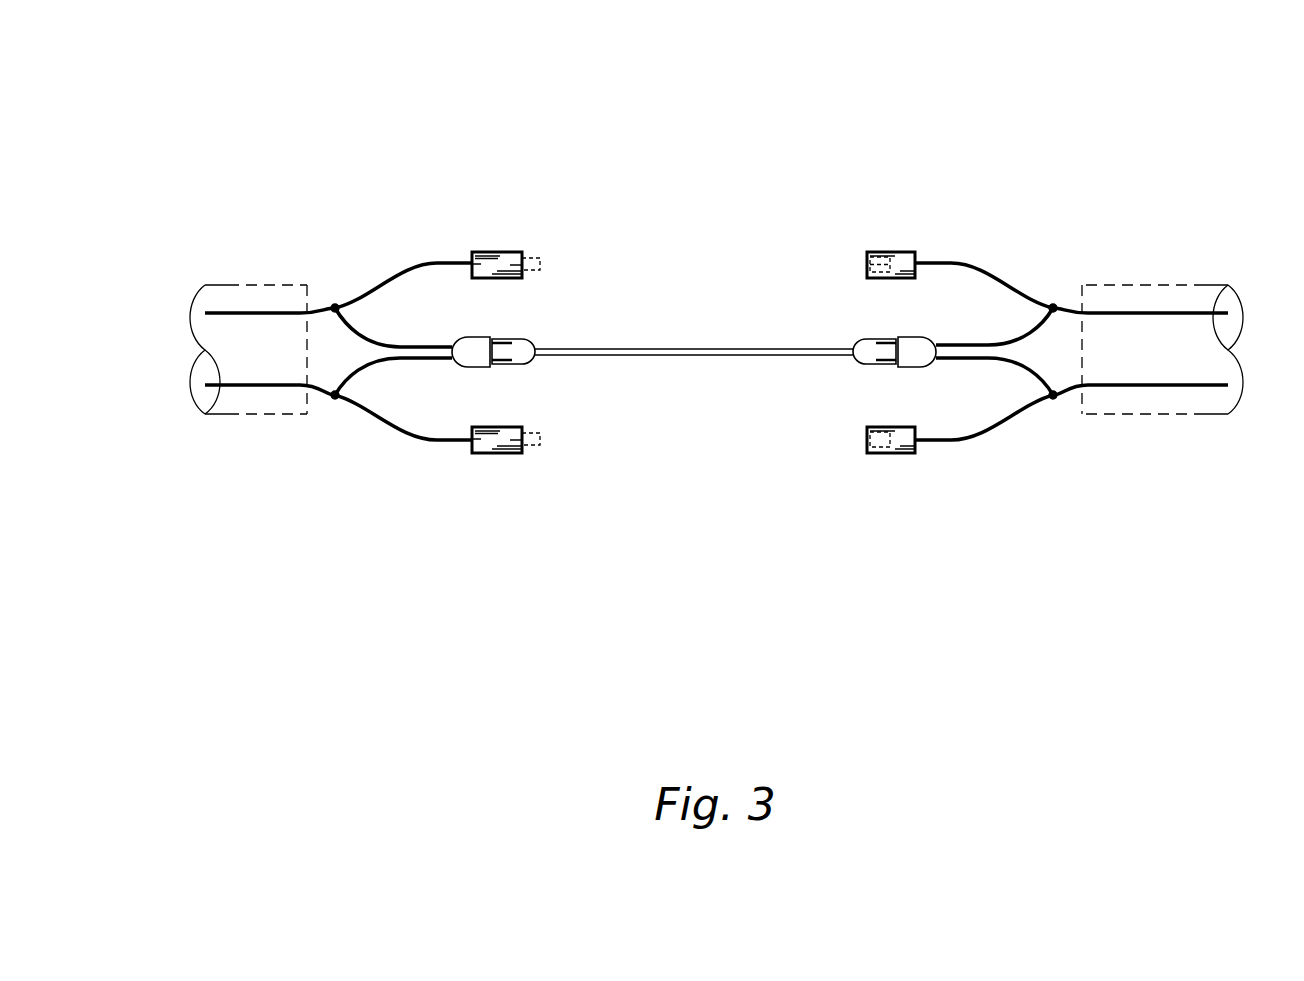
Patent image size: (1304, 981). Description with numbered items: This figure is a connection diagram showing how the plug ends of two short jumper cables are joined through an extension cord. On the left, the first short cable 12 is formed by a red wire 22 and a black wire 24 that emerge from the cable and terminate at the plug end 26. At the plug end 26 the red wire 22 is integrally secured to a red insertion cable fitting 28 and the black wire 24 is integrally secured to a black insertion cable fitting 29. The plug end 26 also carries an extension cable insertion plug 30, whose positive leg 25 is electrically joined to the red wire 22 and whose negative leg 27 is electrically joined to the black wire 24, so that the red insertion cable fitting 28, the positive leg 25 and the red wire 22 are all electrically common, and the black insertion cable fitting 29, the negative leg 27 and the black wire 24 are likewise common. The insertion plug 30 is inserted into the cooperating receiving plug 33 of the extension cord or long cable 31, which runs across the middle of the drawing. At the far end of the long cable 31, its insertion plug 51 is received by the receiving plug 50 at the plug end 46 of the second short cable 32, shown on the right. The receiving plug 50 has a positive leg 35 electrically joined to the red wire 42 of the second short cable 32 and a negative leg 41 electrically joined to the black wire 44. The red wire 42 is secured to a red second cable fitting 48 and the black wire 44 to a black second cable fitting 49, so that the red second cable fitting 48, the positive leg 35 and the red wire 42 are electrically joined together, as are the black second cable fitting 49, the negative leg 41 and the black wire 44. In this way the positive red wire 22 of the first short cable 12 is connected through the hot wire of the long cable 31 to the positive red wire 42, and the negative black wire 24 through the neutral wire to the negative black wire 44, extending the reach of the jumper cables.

The first short cable 12 is at (230, 285).
The red wire 22 is at (290, 312).
The black wire 24 is at (282, 414).
The positive leg 25 is at (370, 337).
The plug end 26 is at (431, 112).
The negative leg 27 is at (365, 368).
The red insertion cable fitting 28 is at (510, 252).
The black insertion cable fitting 29 is at (498, 453).
The insertion plug 30 is at (482, 367).
The long cable 31 is at (658, 350).
The second short cable 32 is at (1205, 287).
The receiving plug 33 is at (512, 339).
The positive leg 35 is at (1026, 340).
The negative leg 41 is at (1028, 362).
The red wire 42 is at (1100, 314).
The black wire 44 is at (1120, 395).
The plug end 46 is at (970, 112).
The red second cable fitting 48 is at (893, 252).
The black second cable fitting 49 is at (878, 454).
The receiving plug 50 is at (906, 336).
The insertion plug 51 is at (872, 367).